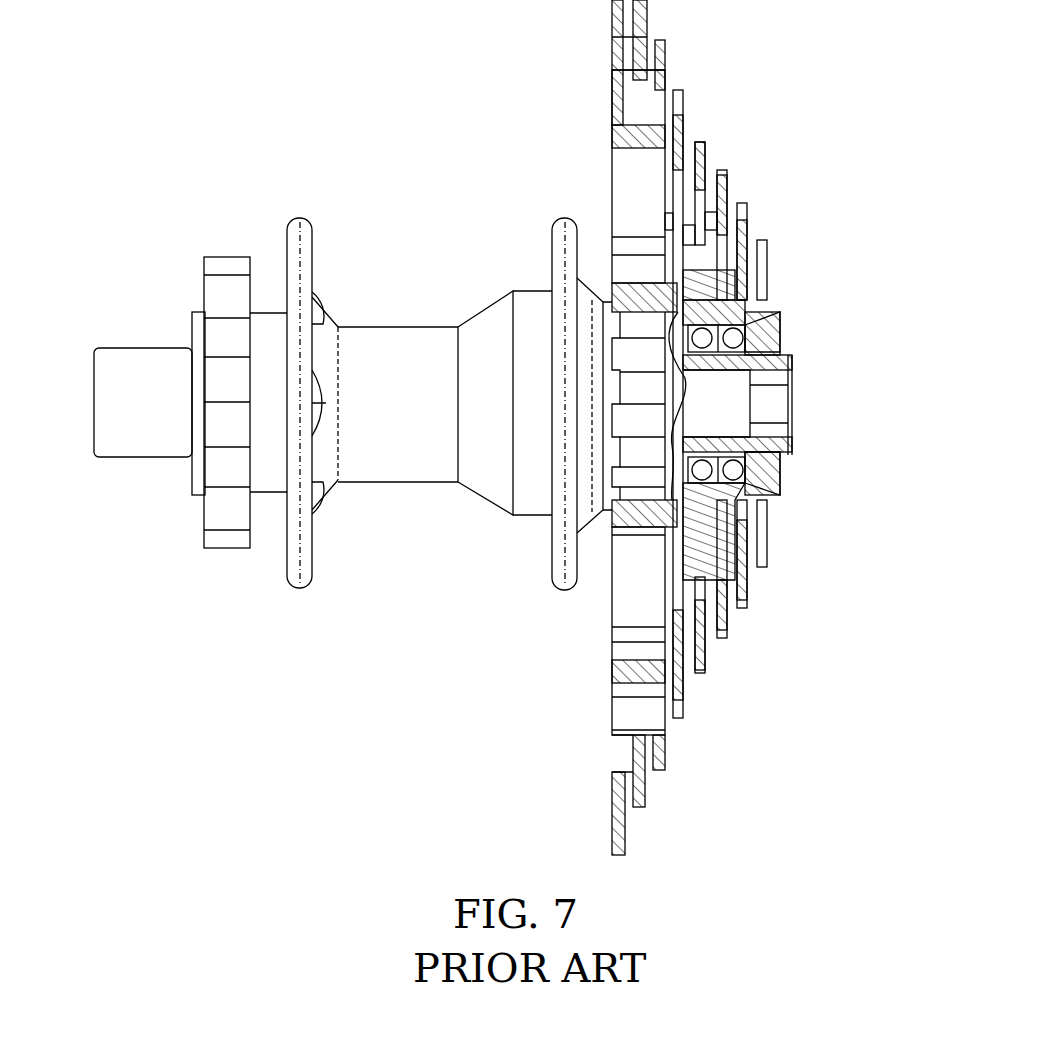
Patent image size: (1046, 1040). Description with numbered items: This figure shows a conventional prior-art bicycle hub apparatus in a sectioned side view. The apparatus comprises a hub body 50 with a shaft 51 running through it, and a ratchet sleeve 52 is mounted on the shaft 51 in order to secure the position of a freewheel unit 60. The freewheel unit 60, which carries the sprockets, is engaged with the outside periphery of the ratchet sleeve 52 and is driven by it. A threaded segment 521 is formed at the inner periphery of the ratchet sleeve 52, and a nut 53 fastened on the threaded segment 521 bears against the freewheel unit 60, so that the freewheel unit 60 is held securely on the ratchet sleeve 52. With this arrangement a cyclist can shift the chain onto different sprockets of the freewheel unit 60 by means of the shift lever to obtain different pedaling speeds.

The hub body 50 is at (408, 276).
The shaft 51 is at (778, 430).
The ratchet sleeve 52 is at (723, 300).
The threaded segment 521 is at (775, 335).
The nut 53 is at (775, 306).
The freewheel unit 60 is at (713, 90).